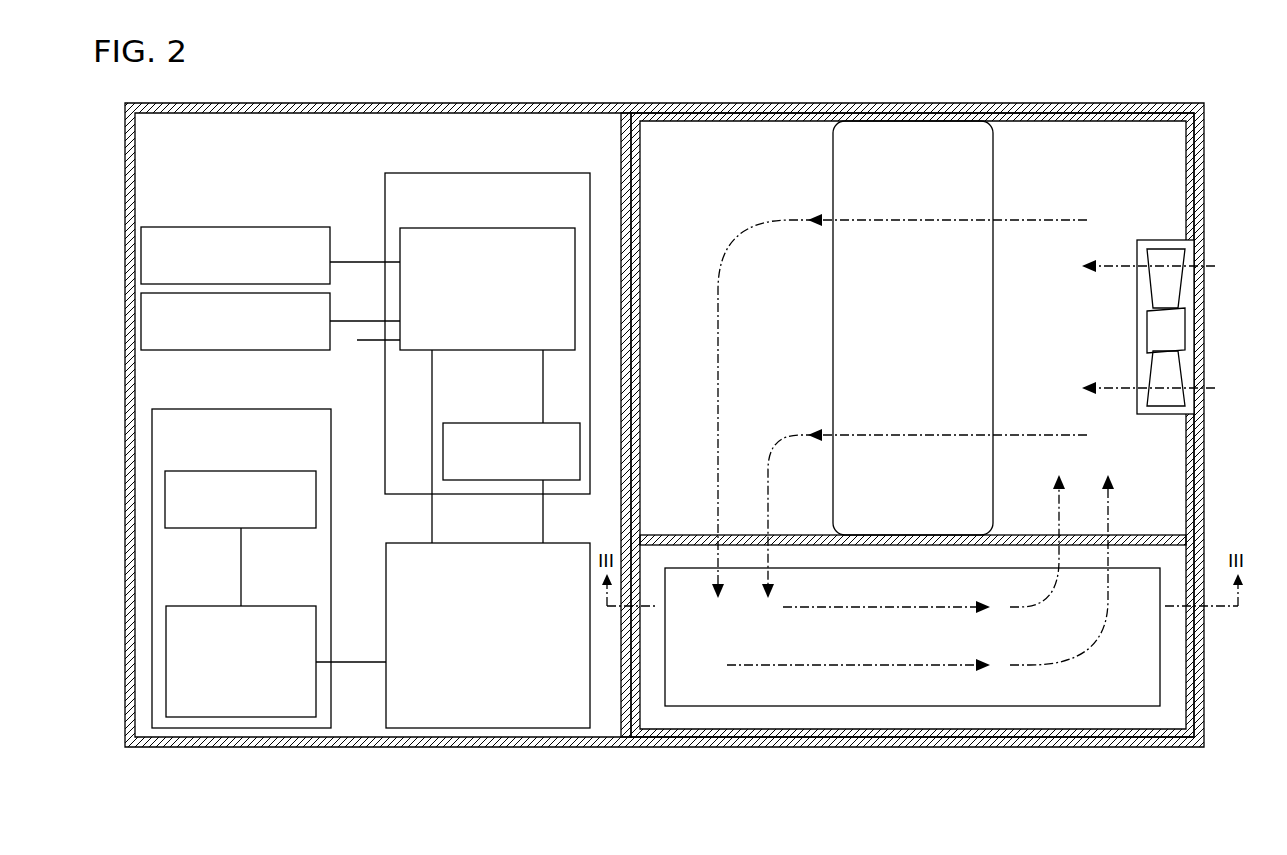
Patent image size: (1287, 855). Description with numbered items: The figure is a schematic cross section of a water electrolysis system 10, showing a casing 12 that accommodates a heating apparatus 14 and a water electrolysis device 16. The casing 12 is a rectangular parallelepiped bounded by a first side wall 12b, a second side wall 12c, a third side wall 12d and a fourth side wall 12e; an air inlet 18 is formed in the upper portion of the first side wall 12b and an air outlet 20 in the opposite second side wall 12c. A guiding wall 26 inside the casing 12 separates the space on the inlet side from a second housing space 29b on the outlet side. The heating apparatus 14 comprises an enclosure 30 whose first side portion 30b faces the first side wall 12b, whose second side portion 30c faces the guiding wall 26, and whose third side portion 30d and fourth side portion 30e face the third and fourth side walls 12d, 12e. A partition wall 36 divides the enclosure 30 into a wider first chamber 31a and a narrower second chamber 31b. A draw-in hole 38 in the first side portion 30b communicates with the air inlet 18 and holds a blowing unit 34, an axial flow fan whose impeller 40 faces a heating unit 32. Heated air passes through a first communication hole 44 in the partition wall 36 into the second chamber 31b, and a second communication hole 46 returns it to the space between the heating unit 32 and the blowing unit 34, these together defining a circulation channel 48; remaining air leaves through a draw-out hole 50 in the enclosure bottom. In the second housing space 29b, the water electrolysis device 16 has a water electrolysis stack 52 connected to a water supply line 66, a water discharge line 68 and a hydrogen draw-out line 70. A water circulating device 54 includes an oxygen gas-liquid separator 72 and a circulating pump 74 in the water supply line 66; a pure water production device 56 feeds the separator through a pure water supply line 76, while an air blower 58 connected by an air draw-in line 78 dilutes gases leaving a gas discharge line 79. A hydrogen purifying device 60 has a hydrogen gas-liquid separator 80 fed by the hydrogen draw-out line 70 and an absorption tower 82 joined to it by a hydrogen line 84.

The water electrolysis system 10 is at (250, 69).
The casing 12 is at (1199, 100).
The first side wall 12b is at (1205, 687).
The second side wall 12c is at (125, 515).
The third side wall 12d is at (450, 103).
The fourth side wall 12e is at (359, 747).
The heating apparatus 14 is at (1144, 100).
The water electrolysis device 16 is at (198, 200).
The air inlet 18 is at (1196, 258).
The air outlet 20 is at (125, 221).
The guiding wall 26 is at (622, 144).
The second housing space 29b is at (547, 130).
The enclosure 30 is at (1205, 113).
The first side portion 30b is at (1186, 458).
The second side portion 30c is at (641, 386).
The third side portion 30d is at (1077, 122).
The fourth side portion 30e is at (1058, 739).
The first chamber 31a is at (762, 135).
The second chamber 31b is at (948, 716).
The heating unit 32 is at (843, 153).
The blowing unit 34 is at (1142, 240).
The partition wall 36 is at (1158, 535).
The draw-in hole 38 is at (1196, 412).
The impeller 40 is at (1170, 326).
The first communication hole 44 is at (712, 535).
The second communication hole 46 is at (1050, 535).
The circulation channel 48 is at (1172, 634).
The draw-out hole 50 is at (1158, 690).
The water electrolysis stack 52 is at (412, 543).
The water circulating device 54 is at (466, 173).
The pure water production device 56 is at (299, 227).
The air blower 58 is at (290, 351).
The hydrogen purifying device 60 is at (196, 409).
The water supply line 66 is at (543, 376).
The water discharge line 68 is at (432, 383).
The hydrogen draw-out line 70 is at (355, 662).
The oxygen gas-liquid separator 72 is at (472, 351).
The circulating pump 74 is at (514, 423).
The pure water supply line 76 is at (362, 262).
The air draw-in line 78 is at (362, 321).
The gas discharge line 79 is at (370, 341).
The hydrogen gas-liquid separator 80 is at (208, 606).
The absorption tower 82 is at (289, 528).
The hydrogen line 84 is at (241, 592).